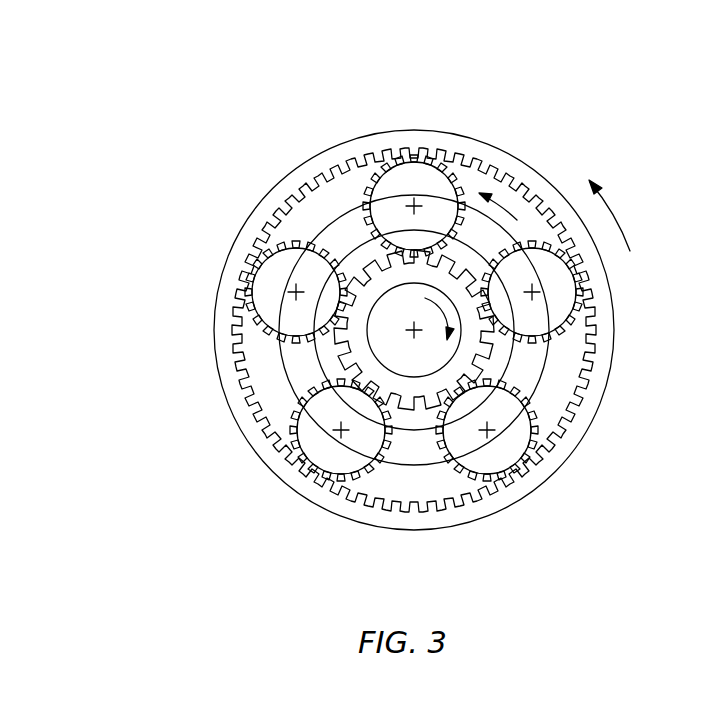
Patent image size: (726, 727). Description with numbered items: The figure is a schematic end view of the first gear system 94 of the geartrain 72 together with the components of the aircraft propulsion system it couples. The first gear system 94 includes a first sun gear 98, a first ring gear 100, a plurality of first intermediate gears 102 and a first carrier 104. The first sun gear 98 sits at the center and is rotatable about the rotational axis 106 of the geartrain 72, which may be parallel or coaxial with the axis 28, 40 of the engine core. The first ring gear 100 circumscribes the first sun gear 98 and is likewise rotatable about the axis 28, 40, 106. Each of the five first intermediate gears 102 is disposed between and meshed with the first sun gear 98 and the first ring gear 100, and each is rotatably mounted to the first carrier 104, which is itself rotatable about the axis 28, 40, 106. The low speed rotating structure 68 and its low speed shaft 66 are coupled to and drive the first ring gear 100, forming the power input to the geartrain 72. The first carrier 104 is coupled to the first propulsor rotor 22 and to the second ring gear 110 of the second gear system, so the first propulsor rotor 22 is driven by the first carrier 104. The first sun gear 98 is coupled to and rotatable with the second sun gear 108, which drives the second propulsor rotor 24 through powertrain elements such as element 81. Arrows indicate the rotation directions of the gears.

The first ring gear 100 is at (392, 128).
The low speed shaft 66 is at (316, 277).
The low speed rotating structure 68 is at (340, 143).
The first carrier 104 is at (338, 217).
The first propulsor rotor 22 is at (275, 323).
The second ring gear 110 is at (287, 280).
The second propulsor rotor 24 is at (264, 330).
The powertrain element 81 is at (264, 330).
The second sun gear 108 is at (352, 348).
The first sun gear 98 is at (478, 355).
The first intermediate gears 102 is at (272, 235).
The axis 28 is at (415, 433).
The core axis 40 is at (415, 433).
The rotational axis 106 is at (417, 333).
The geartrain 72 is at (591, 142).
The first gear system 94 is at (552, 125).